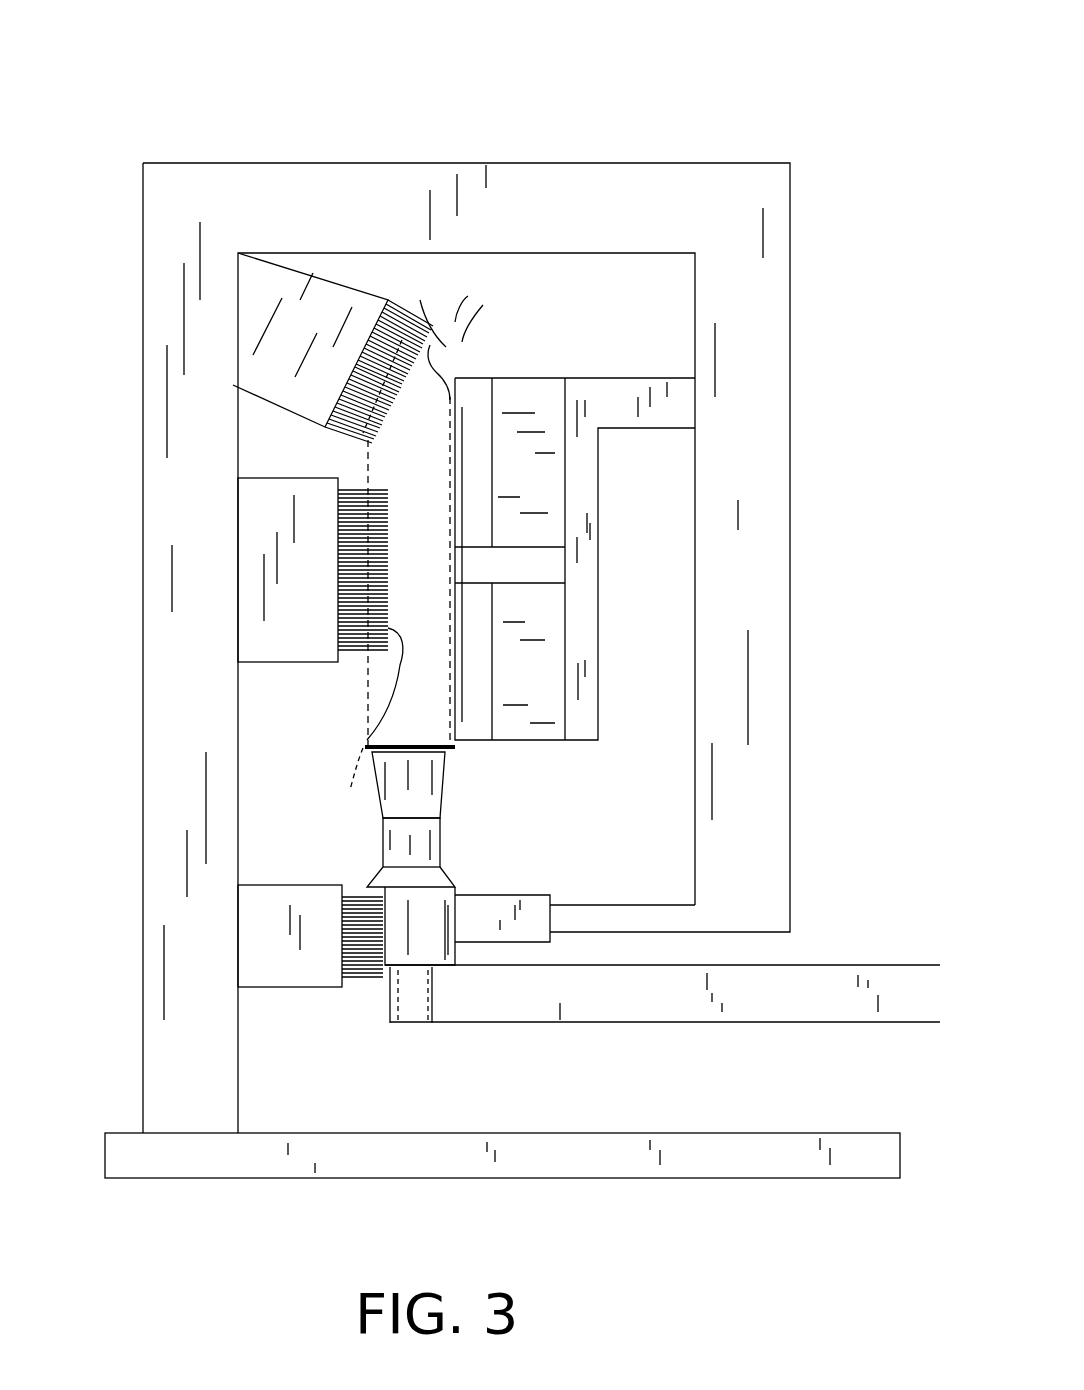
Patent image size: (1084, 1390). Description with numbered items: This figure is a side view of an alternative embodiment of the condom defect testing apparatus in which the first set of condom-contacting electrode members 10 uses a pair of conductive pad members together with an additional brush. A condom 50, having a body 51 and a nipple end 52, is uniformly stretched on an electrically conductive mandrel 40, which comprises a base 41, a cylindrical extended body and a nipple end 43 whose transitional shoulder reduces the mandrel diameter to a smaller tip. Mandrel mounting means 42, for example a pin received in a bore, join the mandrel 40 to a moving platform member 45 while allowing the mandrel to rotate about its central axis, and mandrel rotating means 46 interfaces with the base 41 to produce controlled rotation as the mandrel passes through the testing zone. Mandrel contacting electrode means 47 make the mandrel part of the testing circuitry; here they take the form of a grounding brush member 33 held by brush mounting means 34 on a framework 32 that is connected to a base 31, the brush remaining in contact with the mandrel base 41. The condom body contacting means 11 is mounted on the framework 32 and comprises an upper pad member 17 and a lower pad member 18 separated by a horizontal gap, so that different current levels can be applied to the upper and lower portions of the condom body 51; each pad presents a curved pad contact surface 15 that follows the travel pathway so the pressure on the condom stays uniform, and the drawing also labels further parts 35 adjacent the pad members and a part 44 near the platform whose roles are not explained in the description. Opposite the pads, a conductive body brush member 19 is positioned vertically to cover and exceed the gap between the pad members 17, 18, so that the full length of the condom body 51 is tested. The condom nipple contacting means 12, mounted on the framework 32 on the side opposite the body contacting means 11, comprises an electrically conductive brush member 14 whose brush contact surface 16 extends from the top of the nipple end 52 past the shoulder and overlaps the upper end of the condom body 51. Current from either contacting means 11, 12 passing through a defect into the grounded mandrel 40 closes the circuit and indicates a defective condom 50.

The first set of condom-contacting electrode members 10 is at (273, 120).
The condom body contacting means 11 is at (622, 346).
The condom nipple contacting means 12 is at (268, 436).
The electrically conductive brush member 14 is at (408, 333).
The pad contact surface 15 is at (440, 385).
The brush contact surface 16 is at (332, 762).
The upper pad member 17 is at (473, 523).
The lower pad member 18 is at (475, 730).
The body brush member 19 is at (357, 648).
The base 31 is at (420, 1163).
The framework 32 is at (655, 187).
The grounding brush member 33 is at (367, 1000).
The brush mounting means 34 is at (333, 295).
The block member 35 is at (547, 475).
The mandrel 40 is at (445, 805).
The base 41 is at (368, 880).
The mandrel mounting means 42 is at (346, 806).
The nipple end 43 is at (470, 295).
The inlet block 44 is at (430, 1010).
The platform member 45 is at (687, 1021).
The mandrel rotating means 46 is at (540, 887).
The mandrel contacting electrode means 47 is at (312, 1038).
The condom 50 is at (448, 753).
The body 51 is at (361, 457).
The nipple end 52 is at (447, 358).